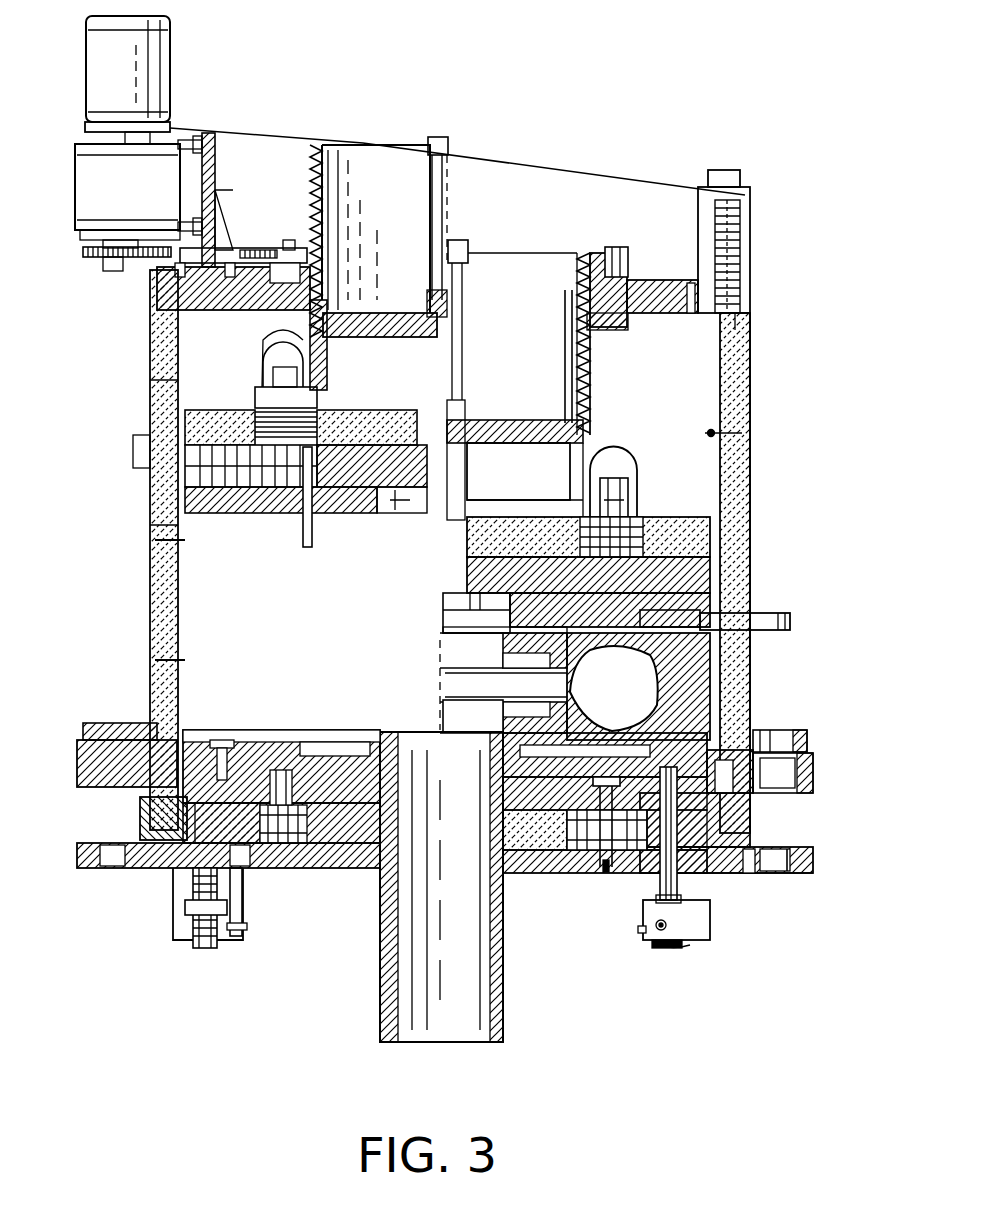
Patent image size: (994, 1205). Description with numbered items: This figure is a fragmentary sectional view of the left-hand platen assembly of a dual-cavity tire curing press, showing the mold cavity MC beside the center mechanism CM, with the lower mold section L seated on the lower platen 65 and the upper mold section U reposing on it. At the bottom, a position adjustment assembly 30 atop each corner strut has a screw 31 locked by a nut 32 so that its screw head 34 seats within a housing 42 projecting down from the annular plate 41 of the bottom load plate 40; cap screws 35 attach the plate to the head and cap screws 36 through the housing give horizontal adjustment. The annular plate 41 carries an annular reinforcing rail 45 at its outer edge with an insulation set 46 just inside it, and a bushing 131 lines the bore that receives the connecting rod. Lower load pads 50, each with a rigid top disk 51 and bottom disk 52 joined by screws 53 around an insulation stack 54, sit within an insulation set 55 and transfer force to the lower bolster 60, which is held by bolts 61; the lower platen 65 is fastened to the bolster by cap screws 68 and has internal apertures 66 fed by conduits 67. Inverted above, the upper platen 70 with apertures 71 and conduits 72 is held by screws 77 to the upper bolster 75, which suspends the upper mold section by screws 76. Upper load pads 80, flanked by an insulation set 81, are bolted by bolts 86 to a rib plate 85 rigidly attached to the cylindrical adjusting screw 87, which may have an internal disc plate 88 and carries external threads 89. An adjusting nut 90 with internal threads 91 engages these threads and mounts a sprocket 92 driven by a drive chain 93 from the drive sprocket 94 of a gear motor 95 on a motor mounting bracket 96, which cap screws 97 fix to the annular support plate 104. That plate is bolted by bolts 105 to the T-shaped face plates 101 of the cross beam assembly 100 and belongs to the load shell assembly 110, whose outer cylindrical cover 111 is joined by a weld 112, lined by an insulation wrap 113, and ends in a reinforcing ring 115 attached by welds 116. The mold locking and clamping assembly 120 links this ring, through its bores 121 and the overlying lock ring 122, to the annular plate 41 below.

The gear motor 95 is at (88, 172).
The drive sprocket 94 is at (100, 260).
The motor mounting bracket 96 is at (217, 168).
The drive chain 93 is at (250, 245).
The cap screws 97 is at (162, 296).
The cross beam assembly 100 is at (482, 152).
The face plates 101 is at (493, 178).
The internal threads 91 is at (587, 253).
The bolts 105 is at (736, 176).
The sprocket 92 is at (640, 250).
The annular support plate 104 is at (710, 282).
The weld 112 is at (745, 293).
The load shell assembly 110 is at (766, 292).
The outer cylindrical cover 111 is at (750, 333).
The adjusting nut 90 is at (628, 322).
The external threads 89 is at (595, 358).
The adjusting screw 87 is at (597, 392).
The insulation wrap 113 is at (752, 438).
The rib plate 85 is at (612, 465).
The internal disc plate 88 is at (482, 445).
The bolts 86 is at (632, 490).
The upper load pads 80 is at (703, 535).
The insulation set 81 is at (700, 560).
The screws 77 is at (690, 578).
The upper bolster 75 is at (695, 590).
The upper platen 70 is at (700, 607).
The conduits 72 is at (770, 617).
The upper mold section U is at (750, 650).
The lower mold section L is at (750, 678).
The internal apertures 66 is at (745, 705).
The lower platen 65 is at (705, 695).
The mold locking and clamping assembly 120 is at (817, 728).
The lock ring 122 is at (810, 740).
The bores 121 is at (813, 773).
The lower bolster 60 is at (748, 795).
The conduits 67 is at (725, 805).
The insulation set 46 is at (753, 840).
The annular reinforcing rail 45 is at (765, 830).
The bottom load plate 40 is at (820, 874).
The bushing 131 is at (788, 876).
The annular plate 41 is at (197, 880).
The screws 76 is at (303, 538).
The internal apertures 71 is at (350, 515).
The mold cavity MC is at (227, 628).
The cap screws 68 is at (237, 757).
The reinforcing ring 115 is at (83, 735).
The welds 116 is at (100, 782).
The cap screws 35 is at (215, 840).
The screw head 34 is at (175, 878).
The nut 32 is at (187, 907).
The screw 31 is at (203, 942).
The position adjustment assembly 30 is at (207, 958).
The housing 42 is at (245, 897).
The cap screws 36 is at (245, 930).
The insulation set 55 is at (543, 852).
The top disk 51 is at (570, 820).
The bolts 61 is at (613, 852).
The lower load pads 50 is at (627, 850).
The screws 53 is at (633, 880).
The insulation stack 54 is at (676, 880).
The bottom disk 52 is at (690, 927).
The center mechanism CM is at (500, 1012).